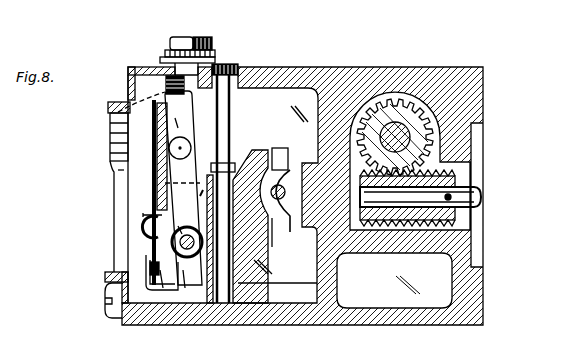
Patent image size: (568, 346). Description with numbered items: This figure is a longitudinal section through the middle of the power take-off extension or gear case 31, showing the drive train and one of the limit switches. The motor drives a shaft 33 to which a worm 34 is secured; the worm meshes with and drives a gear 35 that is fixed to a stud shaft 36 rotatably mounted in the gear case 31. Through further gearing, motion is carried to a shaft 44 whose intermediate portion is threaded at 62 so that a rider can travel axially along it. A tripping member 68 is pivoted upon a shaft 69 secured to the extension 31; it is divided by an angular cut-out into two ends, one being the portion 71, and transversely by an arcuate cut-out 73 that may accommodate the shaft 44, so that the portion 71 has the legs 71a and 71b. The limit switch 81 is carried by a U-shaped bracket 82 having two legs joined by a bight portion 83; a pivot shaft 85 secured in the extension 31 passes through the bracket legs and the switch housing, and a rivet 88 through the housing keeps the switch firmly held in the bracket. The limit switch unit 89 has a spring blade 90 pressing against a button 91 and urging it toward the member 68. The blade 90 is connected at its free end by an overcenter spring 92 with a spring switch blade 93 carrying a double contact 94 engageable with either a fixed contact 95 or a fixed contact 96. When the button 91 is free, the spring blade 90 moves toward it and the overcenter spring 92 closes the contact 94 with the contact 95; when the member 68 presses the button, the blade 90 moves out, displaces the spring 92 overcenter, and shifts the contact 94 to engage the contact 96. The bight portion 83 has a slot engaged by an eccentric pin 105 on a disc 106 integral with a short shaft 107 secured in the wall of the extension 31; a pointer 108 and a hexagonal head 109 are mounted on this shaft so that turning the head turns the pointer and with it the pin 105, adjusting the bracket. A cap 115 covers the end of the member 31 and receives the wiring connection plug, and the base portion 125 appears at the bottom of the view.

The power take-off extension or gear case 31 is at (472, 70).
The shaft 33 is at (482, 195).
The worm 34 is at (456, 220).
The gear 35 is at (392, 108).
The stud shaft 36 is at (411, 138).
The shaft 44 is at (293, 256).
The threaded portion 62 is at (285, 188).
The tripping member 68 is at (252, 150).
The shaft 69 is at (232, 100).
The end portion of tripping member 71 is at (258, 278).
The leg 71a is at (283, 148).
The leg 71b is at (288, 244).
The arcuate cut-out 73 is at (262, 282).
The limit switch 81 is at (147, 139).
The U-shaped bracket 82 is at (229, 150).
The bight portion 83 is at (160, 74).
The pivot shaft 85 is at (197, 289).
The rivet 88 is at (186, 139).
The limit switch unit 89 is at (166, 111).
The spring blade 90 is at (142, 232).
The button 91 is at (204, 192).
The overcenter spring 92 is at (143, 215).
The spring switch blade 93 is at (156, 175).
The double contact 94 is at (164, 288).
The fixed contact 95 is at (146, 261).
The fixed contact 96 is at (185, 288).
The eccentric pin 105 is at (110, 130).
The disc 106 is at (183, 36).
The short shaft 107 is at (193, 37).
The pointer 108 is at (167, 52).
The hexagonal head 109 is at (214, 37).
The cap 115 is at (108, 108).
The base 125 is at (459, 343).